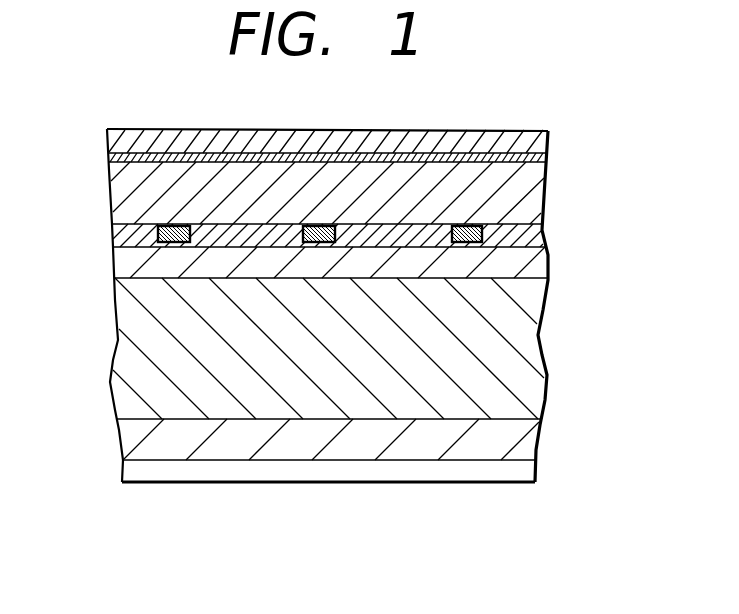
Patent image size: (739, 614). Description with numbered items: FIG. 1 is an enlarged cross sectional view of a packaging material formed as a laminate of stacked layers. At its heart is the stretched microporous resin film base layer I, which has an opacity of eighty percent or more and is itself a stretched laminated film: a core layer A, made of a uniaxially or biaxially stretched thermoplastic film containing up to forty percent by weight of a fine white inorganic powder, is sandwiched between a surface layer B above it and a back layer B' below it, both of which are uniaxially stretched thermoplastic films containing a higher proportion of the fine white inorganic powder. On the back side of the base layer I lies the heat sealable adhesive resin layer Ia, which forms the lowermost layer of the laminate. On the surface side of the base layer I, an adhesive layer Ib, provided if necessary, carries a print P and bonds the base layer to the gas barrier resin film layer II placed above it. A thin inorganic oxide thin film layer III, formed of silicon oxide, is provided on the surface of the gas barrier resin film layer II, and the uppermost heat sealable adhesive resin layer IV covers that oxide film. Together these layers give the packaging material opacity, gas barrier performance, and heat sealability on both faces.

The heat sealable adhesive resin layer IV is at (535, 142).
The inorganic oxide thin film layer III is at (533, 162).
The gas barrier resin film layer II is at (527, 203).
The adhesive layer Ib is at (331, 213).
The heat sealable adhesive resin layer Ia is at (535, 478).
The stretched microporous resin film base layer I is at (389, 355).
The core layer A is at (535, 331).
The surface layer B is at (360, 269).
The back layer B' is at (368, 440).
The print P is at (177, 225).